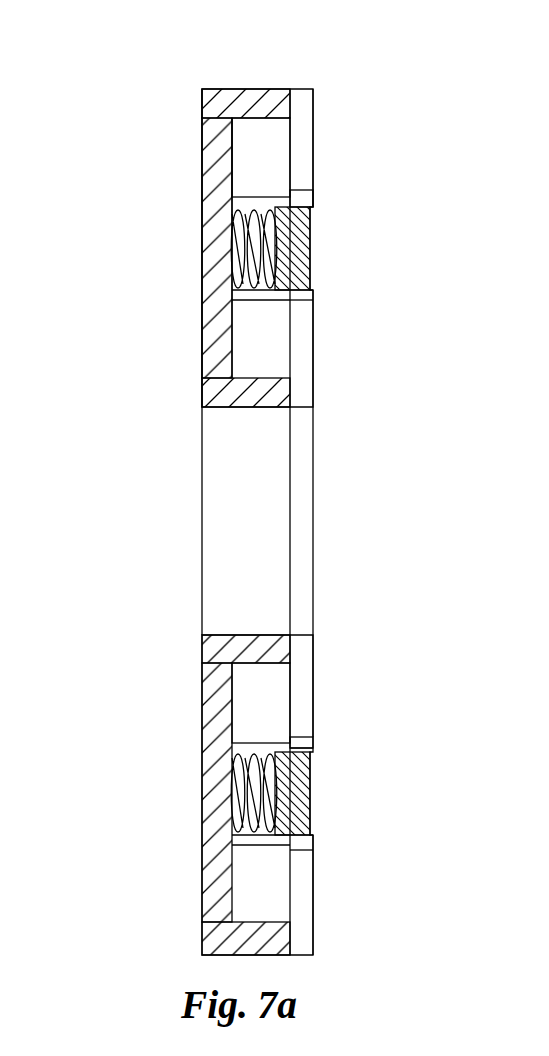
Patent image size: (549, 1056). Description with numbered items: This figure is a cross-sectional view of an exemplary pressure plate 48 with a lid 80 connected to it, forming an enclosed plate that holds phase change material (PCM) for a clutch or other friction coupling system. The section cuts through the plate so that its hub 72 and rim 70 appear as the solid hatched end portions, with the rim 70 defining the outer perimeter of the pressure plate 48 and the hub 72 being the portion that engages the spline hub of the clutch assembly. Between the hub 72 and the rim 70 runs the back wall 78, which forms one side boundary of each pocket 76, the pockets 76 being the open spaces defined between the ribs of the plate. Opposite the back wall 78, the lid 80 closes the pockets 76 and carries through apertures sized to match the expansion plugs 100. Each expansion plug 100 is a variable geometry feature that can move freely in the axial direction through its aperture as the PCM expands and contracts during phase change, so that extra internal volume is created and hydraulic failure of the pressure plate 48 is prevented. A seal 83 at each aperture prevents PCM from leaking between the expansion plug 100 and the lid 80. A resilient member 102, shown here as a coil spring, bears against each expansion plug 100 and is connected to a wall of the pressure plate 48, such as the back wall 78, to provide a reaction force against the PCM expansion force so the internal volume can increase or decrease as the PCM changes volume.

The pressure plate 48 is at (137, 491).
The rim 70 is at (259, 432).
The hub 72 is at (233, 635).
The pocket 76 is at (263, 148).
The back wall 78 is at (203, 150).
The lid 80 is at (305, 511).
The seal 83 is at (305, 197).
The expansion plug 100 is at (300, 230).
The resilient member 102 is at (236, 252).